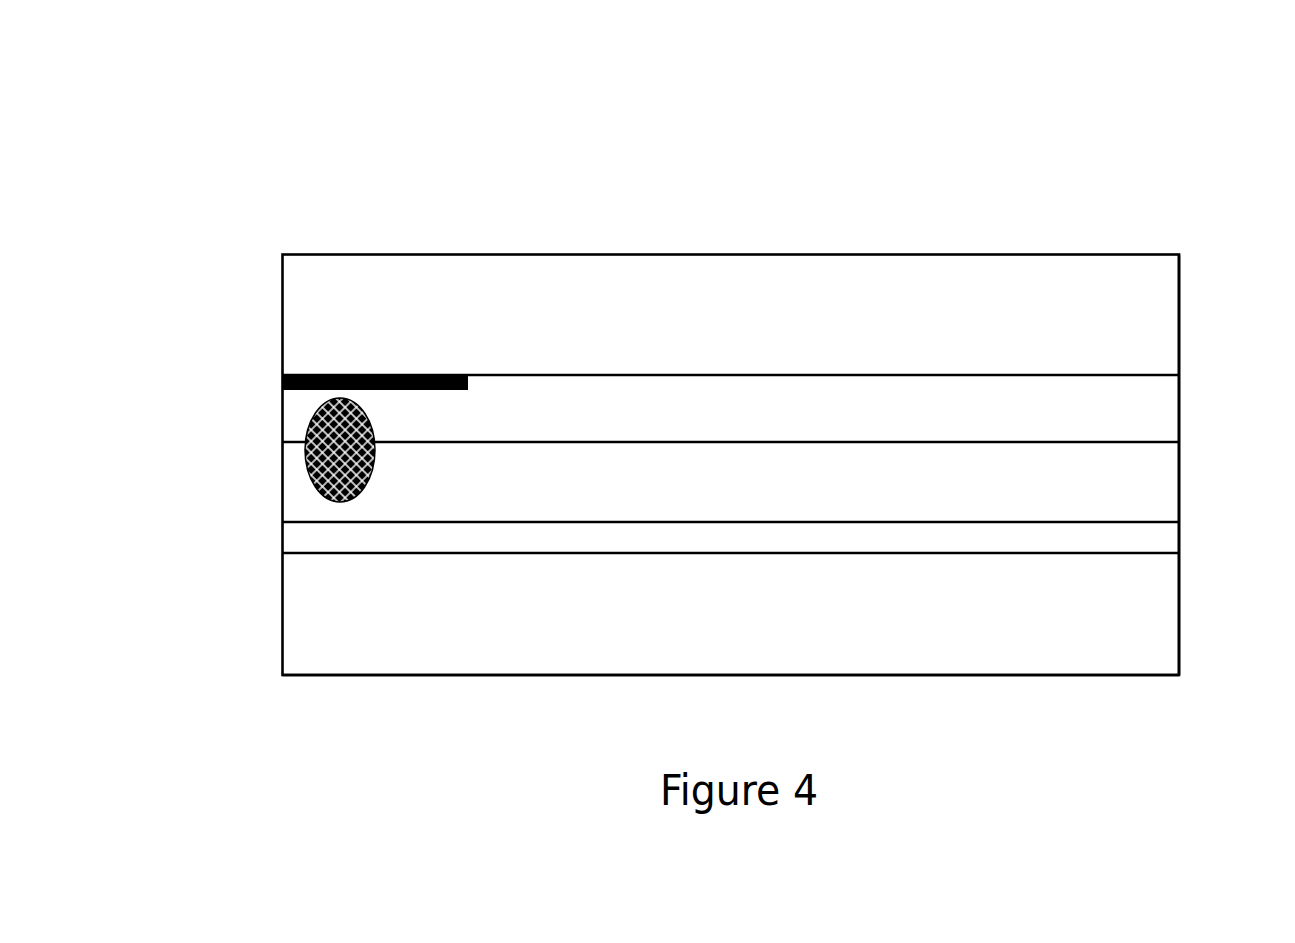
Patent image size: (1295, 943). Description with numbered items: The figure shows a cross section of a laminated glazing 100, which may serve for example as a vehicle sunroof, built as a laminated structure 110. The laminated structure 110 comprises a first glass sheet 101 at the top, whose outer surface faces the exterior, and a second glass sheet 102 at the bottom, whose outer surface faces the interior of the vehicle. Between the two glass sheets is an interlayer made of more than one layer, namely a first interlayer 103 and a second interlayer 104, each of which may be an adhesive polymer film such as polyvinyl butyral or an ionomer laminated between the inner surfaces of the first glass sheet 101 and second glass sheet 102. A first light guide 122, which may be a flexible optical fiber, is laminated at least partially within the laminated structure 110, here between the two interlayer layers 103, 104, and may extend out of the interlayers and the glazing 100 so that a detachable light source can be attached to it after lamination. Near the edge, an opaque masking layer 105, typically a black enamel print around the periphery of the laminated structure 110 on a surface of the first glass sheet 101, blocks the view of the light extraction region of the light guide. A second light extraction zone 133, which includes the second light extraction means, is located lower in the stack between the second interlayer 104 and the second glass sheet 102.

The glazing 100 is at (295, 193).
The laminated structure 110 is at (1180, 255).
The first glass sheet 101 is at (1152, 300).
The opaque masking layer 105 is at (408, 374).
The first interlayer 103 is at (1153, 405).
The first light guide 122 is at (307, 430).
The second interlayer 104 is at (1153, 478).
The second light extraction zone 133 is at (298, 545).
The second glass sheet 102 is at (1153, 607).